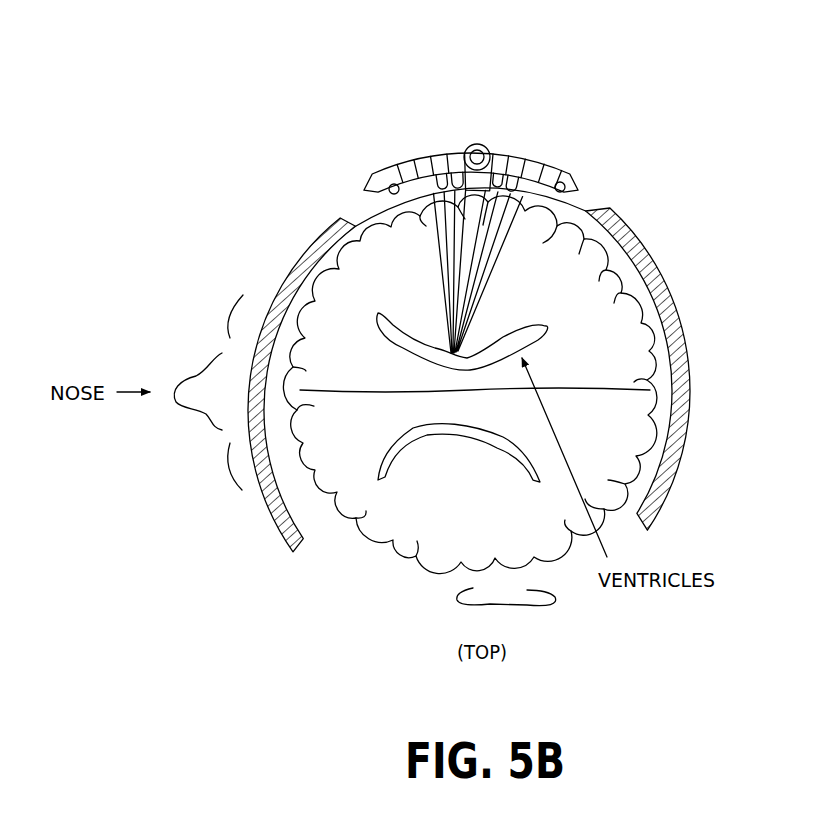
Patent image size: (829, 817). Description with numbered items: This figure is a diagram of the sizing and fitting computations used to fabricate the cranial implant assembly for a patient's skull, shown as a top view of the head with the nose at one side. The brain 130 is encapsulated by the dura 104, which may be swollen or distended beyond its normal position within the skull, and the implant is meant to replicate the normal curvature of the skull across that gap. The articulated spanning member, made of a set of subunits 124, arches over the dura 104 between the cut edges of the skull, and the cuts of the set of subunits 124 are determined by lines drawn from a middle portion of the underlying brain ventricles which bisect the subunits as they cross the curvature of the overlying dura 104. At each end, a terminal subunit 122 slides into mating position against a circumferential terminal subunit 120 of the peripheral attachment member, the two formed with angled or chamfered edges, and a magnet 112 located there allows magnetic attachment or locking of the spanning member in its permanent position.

The dura 104 is at (471, 251).
The magnet 112 is at (386, 196).
The circumferential terminal subunit 120 is at (325, 247).
The terminal subunit 122 is at (396, 177).
The set of subunits 124 is at (437, 153).
The brain 130 is at (473, 531).